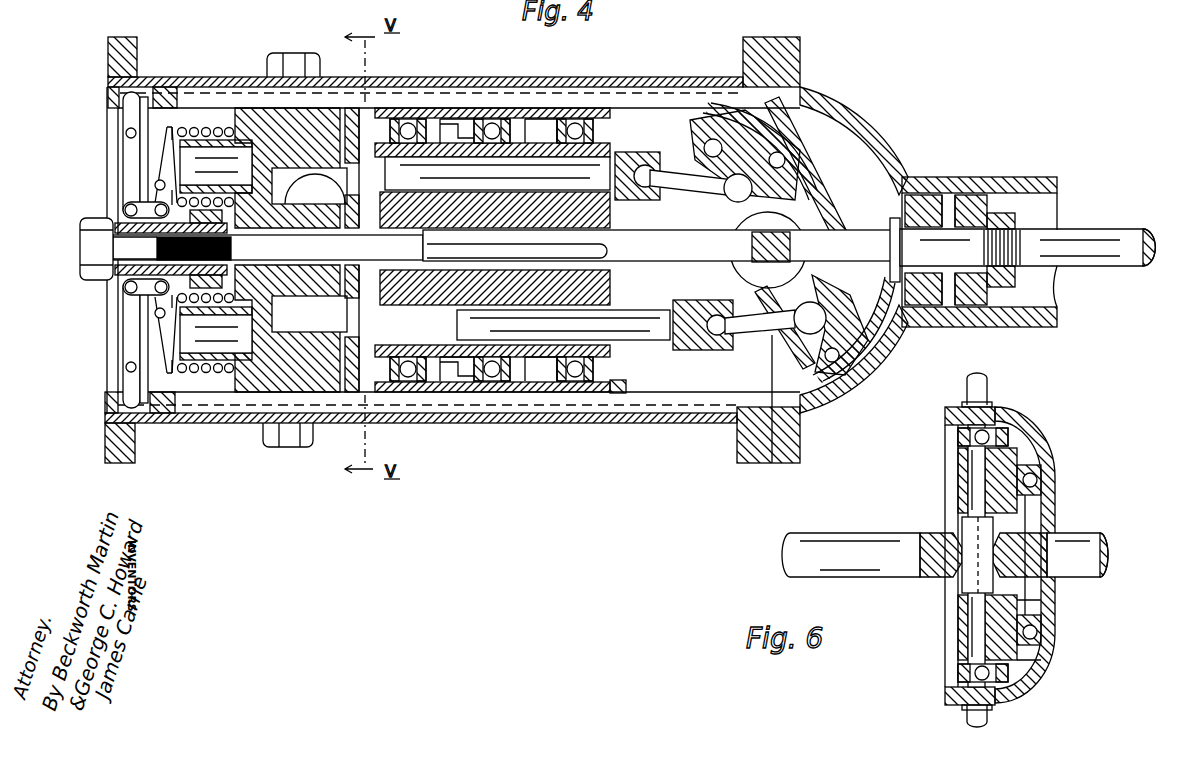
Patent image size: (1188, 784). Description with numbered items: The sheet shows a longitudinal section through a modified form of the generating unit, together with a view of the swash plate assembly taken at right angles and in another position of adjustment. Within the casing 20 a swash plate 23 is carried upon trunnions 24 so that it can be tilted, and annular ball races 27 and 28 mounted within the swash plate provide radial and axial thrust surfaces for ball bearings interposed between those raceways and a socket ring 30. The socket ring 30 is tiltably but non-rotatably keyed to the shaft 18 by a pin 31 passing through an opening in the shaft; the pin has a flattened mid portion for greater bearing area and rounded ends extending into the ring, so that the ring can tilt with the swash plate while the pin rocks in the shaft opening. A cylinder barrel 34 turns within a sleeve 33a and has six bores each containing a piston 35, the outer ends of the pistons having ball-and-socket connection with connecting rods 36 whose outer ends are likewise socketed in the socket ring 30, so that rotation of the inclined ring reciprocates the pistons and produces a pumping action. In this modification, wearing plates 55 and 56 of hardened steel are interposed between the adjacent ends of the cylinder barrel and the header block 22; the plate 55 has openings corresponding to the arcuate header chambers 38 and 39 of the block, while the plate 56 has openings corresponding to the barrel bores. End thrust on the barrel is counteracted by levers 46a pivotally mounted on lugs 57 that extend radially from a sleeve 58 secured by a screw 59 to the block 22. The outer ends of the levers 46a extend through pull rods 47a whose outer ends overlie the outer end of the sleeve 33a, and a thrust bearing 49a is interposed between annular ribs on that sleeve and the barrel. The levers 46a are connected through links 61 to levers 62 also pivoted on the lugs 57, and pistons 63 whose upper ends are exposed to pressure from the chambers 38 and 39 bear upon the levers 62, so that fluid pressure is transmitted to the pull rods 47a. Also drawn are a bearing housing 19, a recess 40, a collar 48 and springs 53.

In FIG. 4, the shaft 18 is at (691, 238).
In FIG. 6, the shaft 18 is at (1073, 540).
In FIG. 4, the bearing housing 19 is at (977, 192).
In FIG. 4, the casing 20 is at (640, 80).
In FIG. 4, the block 22 is at (245, 118).
In FIG. 4, the swash plate 23 is at (812, 232).
In FIG. 6, the swash plate 23 is at (1022, 428).
In FIG. 6, the trunnions 24 is at (985, 381).
In FIG. 4, the annular ball race 27 is at (713, 133).
In FIG. 6, the annular ball race 27 is at (958, 672).
In FIG. 4, the annular ball race 28 is at (798, 152).
In FIG. 6, the annular ball race 28 is at (1040, 625).
In FIG. 4, the socket ring 30 is at (762, 140).
In FIG. 6, the socket ring 30 is at (1035, 660).
In FIG. 4, the pin 31 is at (775, 230).
In FIG. 6, the pin 31 is at (975, 617).
In FIG. 4, the sleeve 33a is at (530, 115).
In FIG. 4, the cylinder barrel 34 is at (560, 130).
In FIG. 4, the piston 35 is at (628, 170).
In FIG. 4, the connecting rod 36 is at (763, 322).
In FIG. 4, the arcuate header chamber 38 is at (300, 168).
In FIG. 4, the arcuate header chamber 39 is at (326, 324).
In FIG. 4, the recess 40 is at (322, 199).
In FIG. 4, the lever 46a is at (127, 116).
In FIG. 4, the pull rod 47a is at (195, 65).
In FIG. 4, the collar 48 is at (625, 385).
In FIG. 4, the thrust bearing 49a is at (497, 120).
In FIG. 4, the spring 53 is at (222, 133).
In FIG. 4, the wearing plate 55 is at (362, 140).
In FIG. 4, the wearing plate 56 is at (393, 140).
In FIG. 4, the lug 57 is at (143, 168).
In FIG. 4, the sleeve 58 is at (82, 242).
In FIG. 4, the screw 59 is at (82, 258).
In FIG. 4, the link 61 is at (125, 208).
In FIG. 4, the lever 62 is at (160, 153).
In FIG. 4, the piston 63 is at (187, 165).